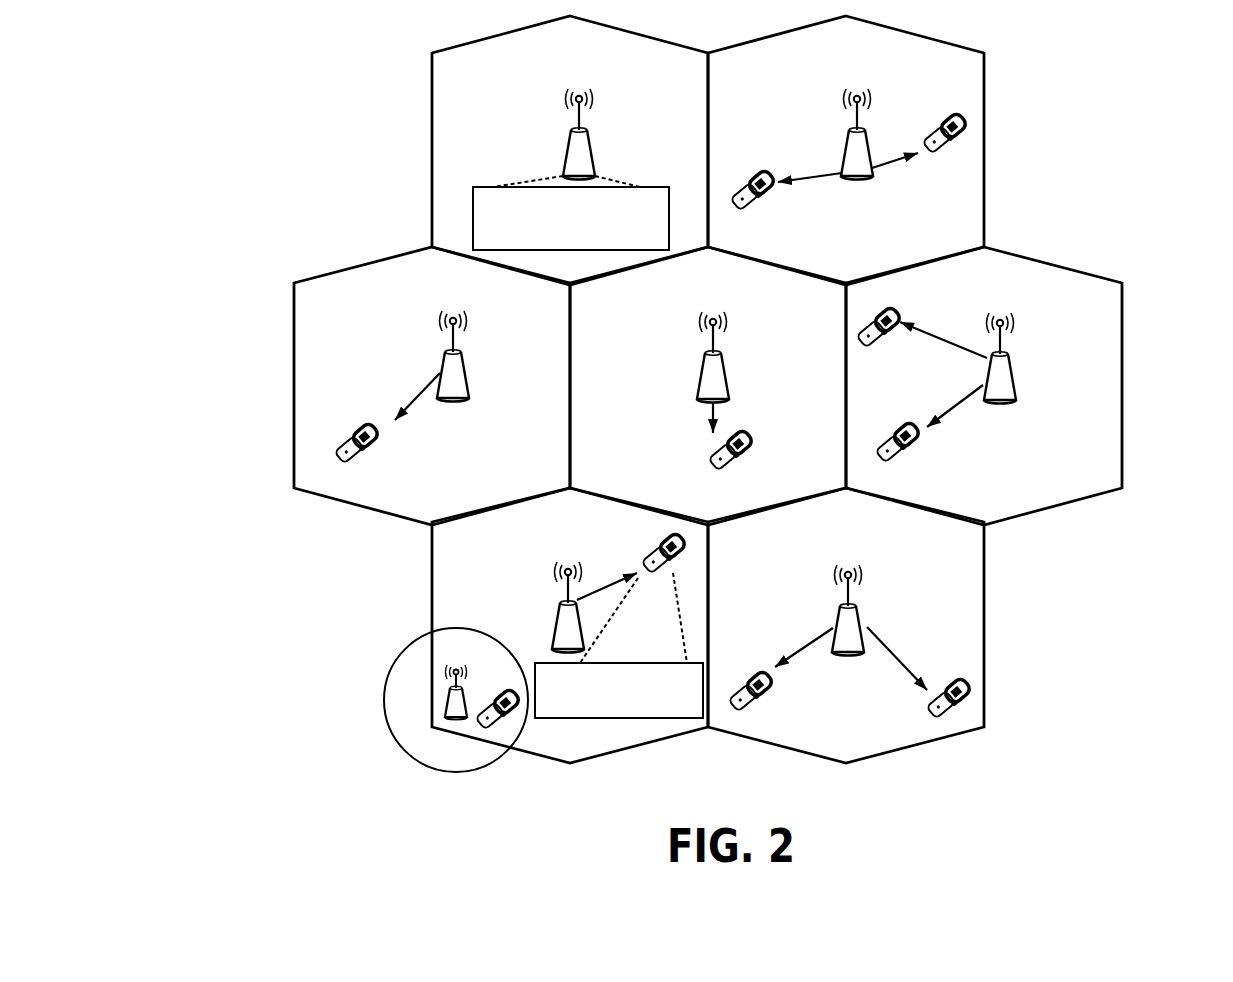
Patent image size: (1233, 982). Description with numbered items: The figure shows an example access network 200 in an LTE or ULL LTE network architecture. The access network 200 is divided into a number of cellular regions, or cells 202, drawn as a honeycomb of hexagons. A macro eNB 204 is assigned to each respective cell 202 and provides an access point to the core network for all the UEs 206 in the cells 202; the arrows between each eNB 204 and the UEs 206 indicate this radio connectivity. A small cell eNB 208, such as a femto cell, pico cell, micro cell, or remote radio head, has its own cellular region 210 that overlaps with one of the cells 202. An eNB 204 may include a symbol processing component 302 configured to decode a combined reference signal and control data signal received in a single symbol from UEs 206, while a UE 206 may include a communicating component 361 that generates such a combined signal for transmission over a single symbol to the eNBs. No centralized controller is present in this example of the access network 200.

The access network 200 is at (197, 103).
The cellular region 202 is at (432, 107).
The macro eNB 204 is at (574, 83).
The UE 206 is at (957, 117).
The small cell eNB 208 is at (453, 657).
The cellular region of small cell eNB 210 is at (398, 703).
The symbol processing component 302 is at (641, 187).
The communicating component 361 is at (590, 718).